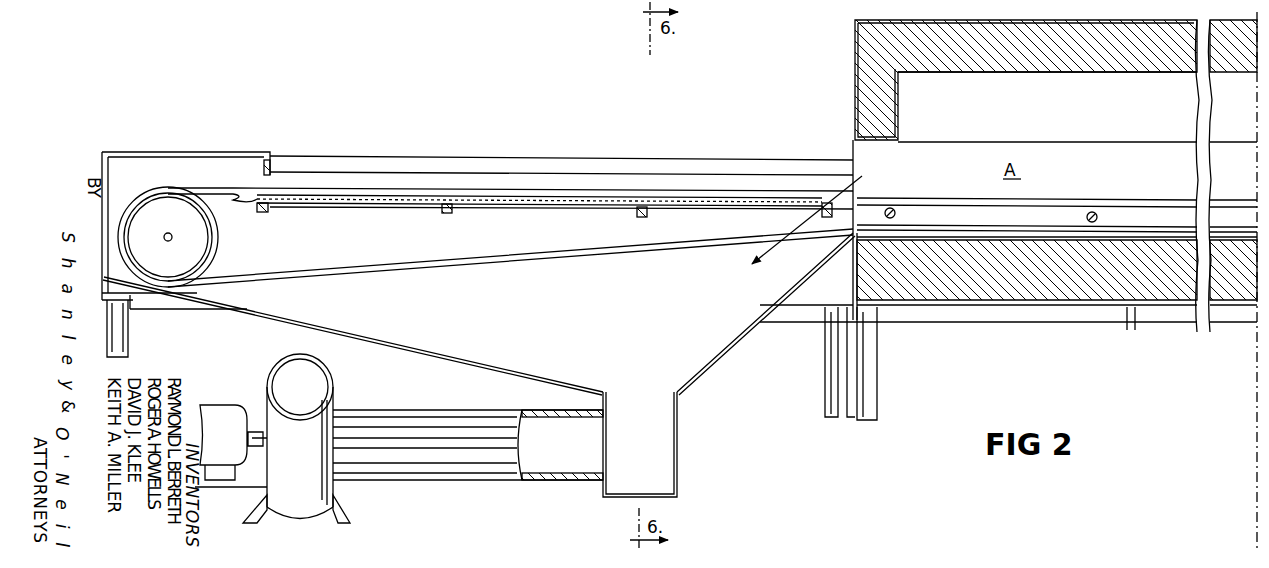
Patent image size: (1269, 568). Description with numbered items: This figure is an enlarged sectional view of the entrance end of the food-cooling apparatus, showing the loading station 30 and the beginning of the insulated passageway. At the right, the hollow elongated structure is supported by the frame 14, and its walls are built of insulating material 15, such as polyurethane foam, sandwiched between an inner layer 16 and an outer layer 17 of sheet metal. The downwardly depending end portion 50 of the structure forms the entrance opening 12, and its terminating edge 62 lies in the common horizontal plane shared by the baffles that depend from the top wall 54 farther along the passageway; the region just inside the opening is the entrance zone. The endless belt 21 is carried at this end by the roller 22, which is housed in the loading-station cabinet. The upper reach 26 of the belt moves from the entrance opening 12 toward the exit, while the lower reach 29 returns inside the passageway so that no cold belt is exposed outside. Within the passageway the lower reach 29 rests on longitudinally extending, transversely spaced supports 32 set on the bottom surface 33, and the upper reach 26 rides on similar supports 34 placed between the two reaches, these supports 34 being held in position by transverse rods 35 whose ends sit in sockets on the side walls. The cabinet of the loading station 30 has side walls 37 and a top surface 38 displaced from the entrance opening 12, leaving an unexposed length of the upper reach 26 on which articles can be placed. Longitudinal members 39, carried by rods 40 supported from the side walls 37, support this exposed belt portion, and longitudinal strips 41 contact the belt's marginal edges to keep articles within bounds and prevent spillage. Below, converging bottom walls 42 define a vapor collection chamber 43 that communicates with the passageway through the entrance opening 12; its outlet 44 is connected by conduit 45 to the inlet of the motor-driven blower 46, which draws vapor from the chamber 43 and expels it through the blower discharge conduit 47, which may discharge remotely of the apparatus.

The entrance opening 12 is at (851, 153).
The frame 14 is at (878, 367).
The insulating material 15 is at (1075, 40).
The inner layer 16 is at (900, 117).
The outer layer 17 is at (993, 22).
The endless belt 21 is at (1078, 178).
The roller 22 is at (213, 252).
The upper reach 26 is at (1168, 200).
The lower reach 29 is at (807, 232).
The loading station 30 is at (288, 149).
The supports 32 is at (983, 237).
The bottom surface 33 is at (1125, 238).
The supports 34 is at (955, 213).
The transverse rods 35 is at (893, 210).
The side walls 37 is at (457, 156).
The top surface 38 is at (173, 152).
The members 39 is at (527, 204).
The rods 40 is at (267, 212).
The strips 41 is at (648, 185).
The converging bottom walls 42 is at (435, 355).
The vapor collection chamber 43 is at (557, 321).
The outlet 44 is at (657, 458).
The conduit 45 is at (460, 463).
The motor-driven blower 46 is at (310, 487).
The blower discharge conduit 47 is at (263, 387).
The end portion 50 is at (872, 100).
The top wall 54 is at (1037, 72).
The terminating edge 62 is at (883, 142).